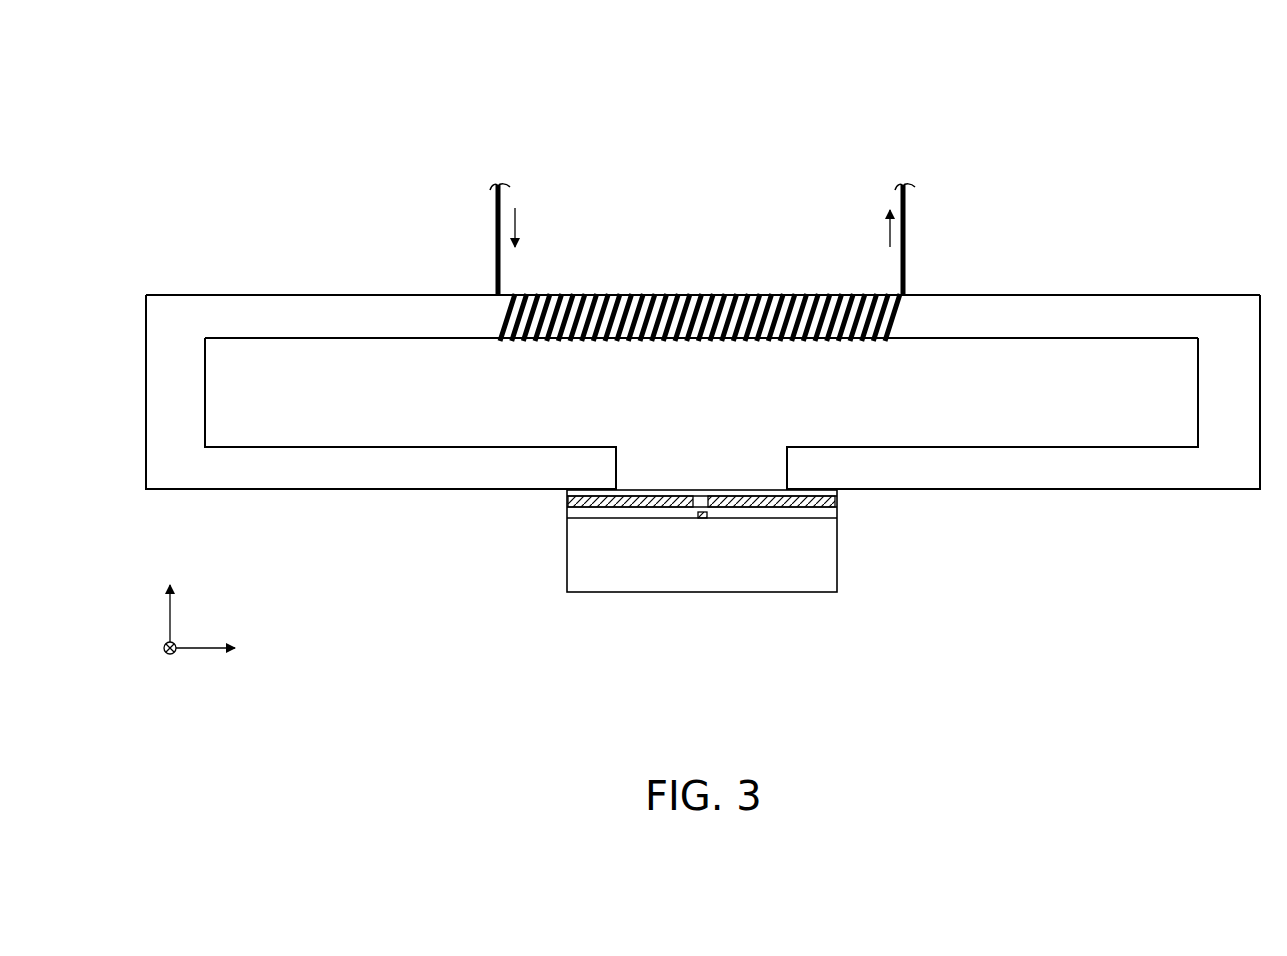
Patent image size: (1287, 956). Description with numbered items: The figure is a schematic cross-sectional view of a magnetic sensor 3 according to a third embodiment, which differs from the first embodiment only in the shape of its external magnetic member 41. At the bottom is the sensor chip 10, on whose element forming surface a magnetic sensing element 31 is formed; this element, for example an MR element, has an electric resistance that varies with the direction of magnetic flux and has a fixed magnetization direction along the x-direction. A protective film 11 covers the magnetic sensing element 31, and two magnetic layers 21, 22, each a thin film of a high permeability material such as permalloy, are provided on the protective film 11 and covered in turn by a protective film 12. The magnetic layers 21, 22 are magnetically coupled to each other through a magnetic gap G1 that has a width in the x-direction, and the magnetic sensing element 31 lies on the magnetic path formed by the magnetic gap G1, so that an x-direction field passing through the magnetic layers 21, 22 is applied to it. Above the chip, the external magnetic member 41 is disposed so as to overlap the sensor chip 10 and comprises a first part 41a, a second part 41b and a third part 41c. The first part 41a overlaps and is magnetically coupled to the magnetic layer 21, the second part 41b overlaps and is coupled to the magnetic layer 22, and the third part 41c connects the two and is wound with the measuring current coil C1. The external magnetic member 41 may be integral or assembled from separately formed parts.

The magnetic sensor 3 is at (1095, 84).
The sensor chip 10 is at (824, 556).
The protective film 11 is at (824, 513).
The protective film 12 is at (811, 493).
The magnetic layer 21 is at (644, 496).
The magnetic layer 22 is at (756, 496).
The magnetic sensing element 31 is at (704, 520).
The external magnetic member 41 is at (703, 345).
The first part 41a is at (437, 457).
The second part 41b is at (1007, 457).
The third part 41c is at (437, 306).
The measuring current coil C1 is at (713, 294).
The magnetic gap G1 is at (704, 478).